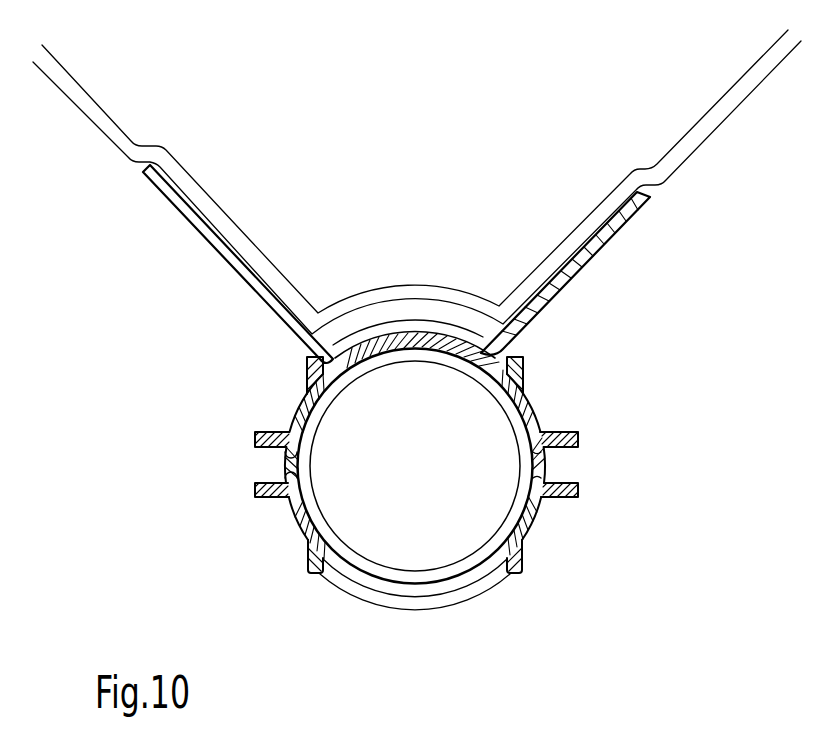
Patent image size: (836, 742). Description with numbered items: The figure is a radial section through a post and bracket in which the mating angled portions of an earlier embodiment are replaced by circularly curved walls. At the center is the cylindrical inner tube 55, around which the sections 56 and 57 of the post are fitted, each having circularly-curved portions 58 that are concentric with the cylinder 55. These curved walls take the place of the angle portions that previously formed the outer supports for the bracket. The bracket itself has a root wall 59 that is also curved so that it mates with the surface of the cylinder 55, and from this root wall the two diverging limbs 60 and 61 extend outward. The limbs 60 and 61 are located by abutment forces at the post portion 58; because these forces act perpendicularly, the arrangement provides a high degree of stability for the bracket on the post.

The inner tube 55 is at (308, 440).
The section 56 is at (305, 393).
The section 57 is at (308, 537).
The circularly-curved portion 58 is at (371, 334).
The root wall 59 is at (394, 338).
The diverging limb 60 is at (240, 270).
The diverging limb 61 is at (557, 291).